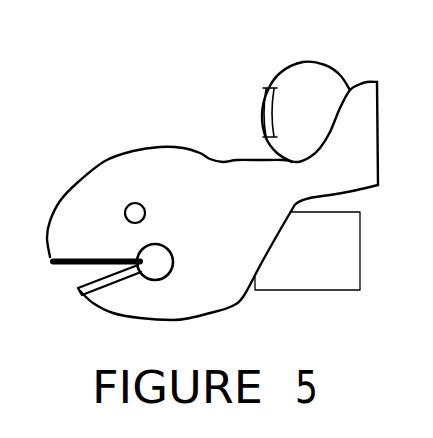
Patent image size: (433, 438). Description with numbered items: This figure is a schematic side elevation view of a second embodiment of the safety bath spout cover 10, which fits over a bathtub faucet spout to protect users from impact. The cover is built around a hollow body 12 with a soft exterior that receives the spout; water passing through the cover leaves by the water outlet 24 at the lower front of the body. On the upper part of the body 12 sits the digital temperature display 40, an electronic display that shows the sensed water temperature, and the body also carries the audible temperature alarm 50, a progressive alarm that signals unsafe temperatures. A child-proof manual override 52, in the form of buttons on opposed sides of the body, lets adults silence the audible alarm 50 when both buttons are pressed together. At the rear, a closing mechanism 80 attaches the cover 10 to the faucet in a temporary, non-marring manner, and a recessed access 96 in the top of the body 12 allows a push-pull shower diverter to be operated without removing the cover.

The safety bath spout cover 10 is at (212, 191).
The hollow body 12 is at (212, 172).
The water outlet 24 is at (156, 322).
The digital temperature display 40 is at (263, 100).
The audible temperature alarm 50 is at (152, 268).
The manual override buttons 52 is at (141, 205).
The closing mechanism 80 is at (335, 267).
The recessed access 96 is at (191, 151).